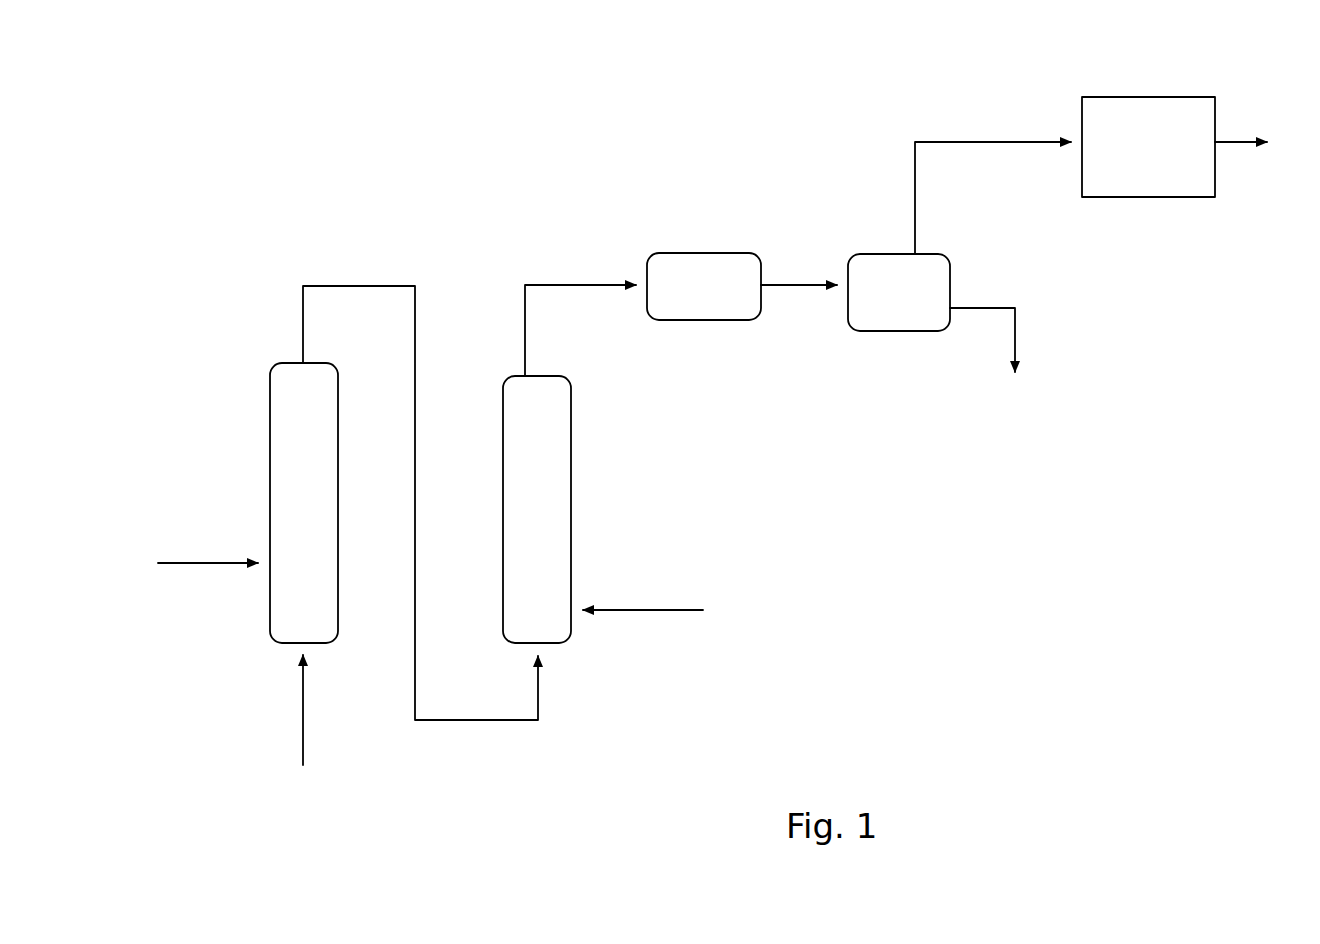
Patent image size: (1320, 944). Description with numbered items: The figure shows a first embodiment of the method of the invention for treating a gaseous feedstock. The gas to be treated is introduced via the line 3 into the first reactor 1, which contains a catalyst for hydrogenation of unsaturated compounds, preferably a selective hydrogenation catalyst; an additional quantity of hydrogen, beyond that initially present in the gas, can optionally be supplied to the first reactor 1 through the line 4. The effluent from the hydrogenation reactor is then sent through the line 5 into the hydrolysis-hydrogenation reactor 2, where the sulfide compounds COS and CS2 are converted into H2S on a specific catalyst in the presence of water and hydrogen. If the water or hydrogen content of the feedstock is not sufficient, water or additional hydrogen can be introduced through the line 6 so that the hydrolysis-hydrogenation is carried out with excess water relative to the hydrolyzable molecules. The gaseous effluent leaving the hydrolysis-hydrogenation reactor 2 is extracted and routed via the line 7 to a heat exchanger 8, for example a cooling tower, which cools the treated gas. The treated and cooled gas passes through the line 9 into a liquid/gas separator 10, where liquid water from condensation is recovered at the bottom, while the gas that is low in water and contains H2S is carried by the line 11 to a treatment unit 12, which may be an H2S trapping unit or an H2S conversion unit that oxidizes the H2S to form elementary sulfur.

The first reactor 1 is at (270, 433).
The hydrolysis-hydrogenation reactor 2 is at (571, 487).
The line 3 is at (303, 742).
The line 4 is at (200, 567).
The line 5 is at (363, 286).
The line 6 is at (650, 610).
The line 7 is at (543, 285).
The heat exchanger 8 is at (715, 320).
The line 9 is at (793, 285).
The liquid/gas separator 10 is at (883, 254).
The line 11 is at (1000, 142).
The treatment unit 12 is at (1147, 197).